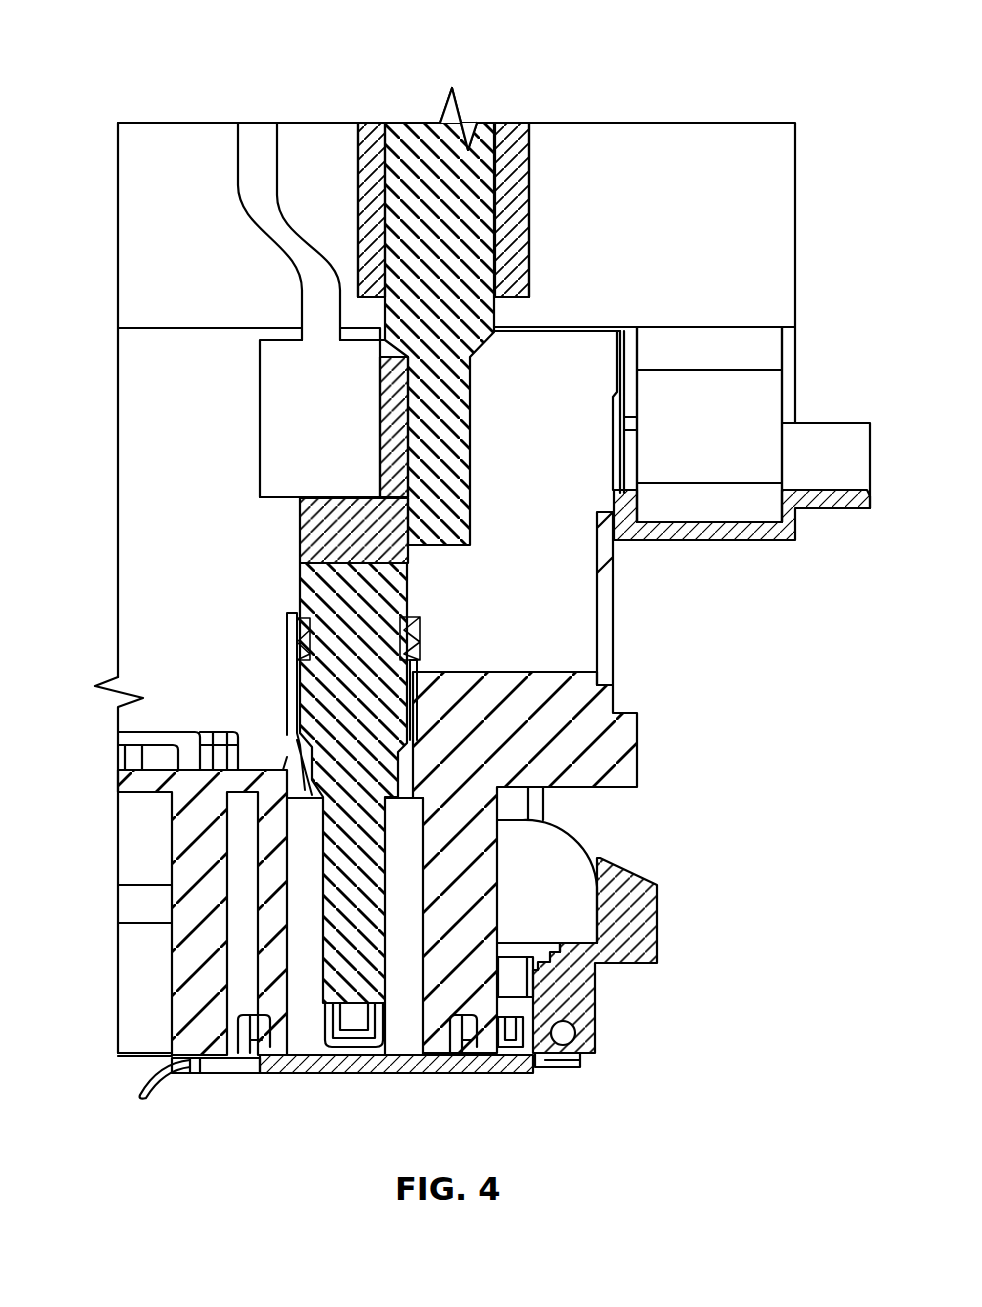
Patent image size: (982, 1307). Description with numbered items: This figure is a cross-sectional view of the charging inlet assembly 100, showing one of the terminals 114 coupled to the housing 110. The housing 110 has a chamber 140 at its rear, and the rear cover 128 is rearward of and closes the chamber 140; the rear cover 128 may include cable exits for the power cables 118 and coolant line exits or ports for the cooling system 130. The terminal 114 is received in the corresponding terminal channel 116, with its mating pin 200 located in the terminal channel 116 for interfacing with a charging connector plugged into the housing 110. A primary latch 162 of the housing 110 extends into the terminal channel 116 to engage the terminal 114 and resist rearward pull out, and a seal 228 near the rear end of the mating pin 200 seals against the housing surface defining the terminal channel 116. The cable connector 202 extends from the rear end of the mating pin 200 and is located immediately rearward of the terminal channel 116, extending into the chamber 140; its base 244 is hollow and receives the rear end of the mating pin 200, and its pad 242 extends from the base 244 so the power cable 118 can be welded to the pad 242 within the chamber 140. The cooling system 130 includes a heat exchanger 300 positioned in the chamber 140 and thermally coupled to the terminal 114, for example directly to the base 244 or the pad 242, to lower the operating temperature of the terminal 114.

The charging inlet assembly 100 is at (757, 49).
The housing 110 is at (583, 1003).
The terminal 114 is at (330, 984).
The terminal channel 116 is at (402, 1010).
The power cable 118 is at (407, 143).
The rear cover 128 is at (775, 245).
The cooling system 130 is at (247, 348).
The chamber 140 is at (151, 570).
The primary latch 162 is at (297, 793).
The mating pin 200 is at (362, 830).
The cable connector 202 is at (298, 517).
The seal 228 is at (422, 633).
The pad 242 is at (388, 435).
The base 244 is at (323, 497).
The heat exchanger 300 is at (275, 363).